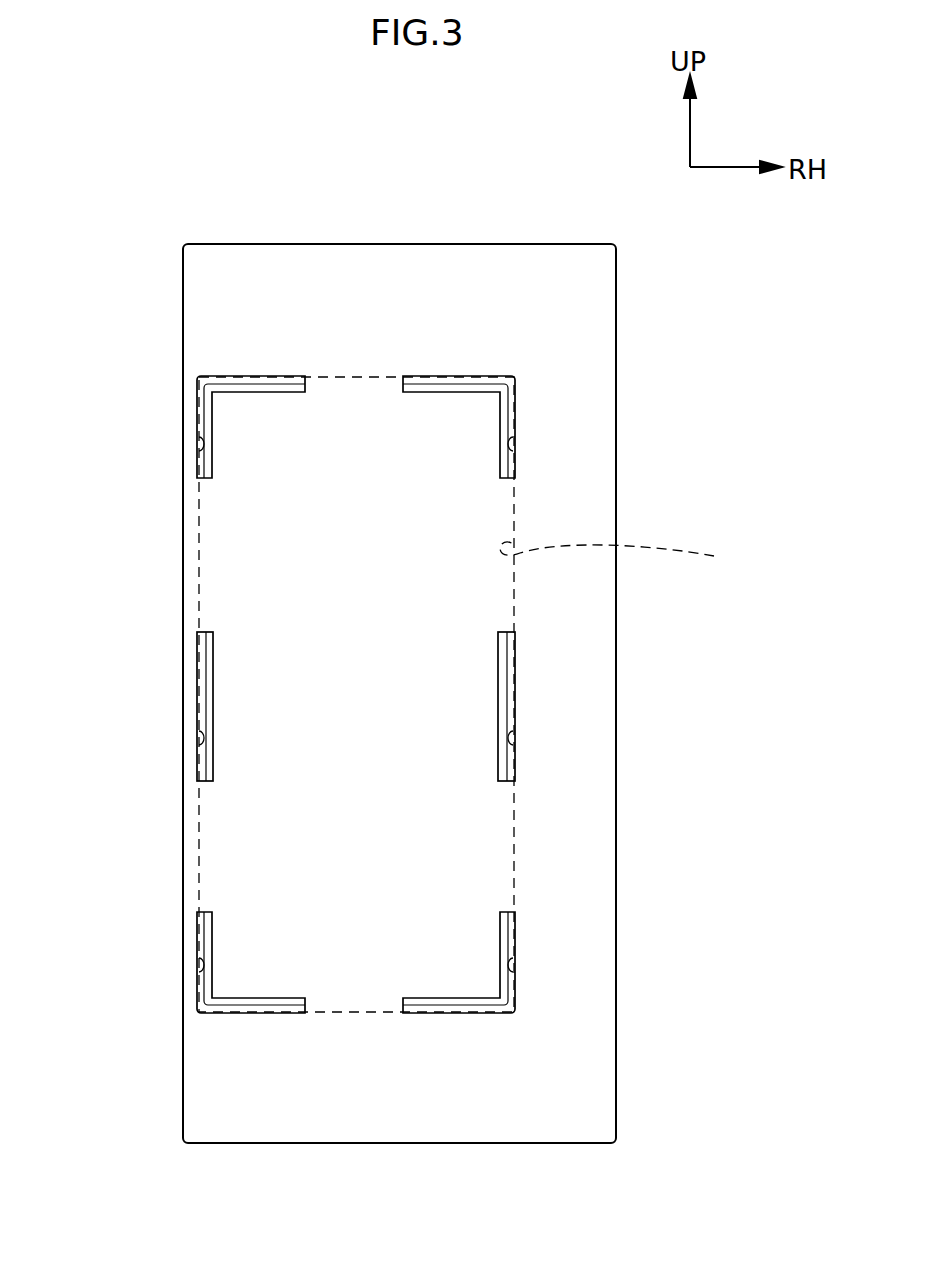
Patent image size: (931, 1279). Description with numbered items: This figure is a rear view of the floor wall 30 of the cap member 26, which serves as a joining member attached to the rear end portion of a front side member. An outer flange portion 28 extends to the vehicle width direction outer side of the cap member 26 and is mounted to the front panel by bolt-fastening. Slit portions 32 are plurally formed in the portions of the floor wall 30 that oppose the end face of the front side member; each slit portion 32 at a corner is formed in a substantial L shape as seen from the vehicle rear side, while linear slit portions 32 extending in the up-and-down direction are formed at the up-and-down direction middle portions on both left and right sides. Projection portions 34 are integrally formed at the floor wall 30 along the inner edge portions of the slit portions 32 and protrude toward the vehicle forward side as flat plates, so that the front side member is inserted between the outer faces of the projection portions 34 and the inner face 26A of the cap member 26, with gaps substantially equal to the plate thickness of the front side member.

The cap member 26 is at (416, 615).
The inner face of the cap member 26A is at (634, 560).
The outer flange portion 28 is at (602, 688).
The floor wall 30 is at (205, 535).
The slit portion 32 is at (197, 444).
The projection portion 34 is at (262, 388).